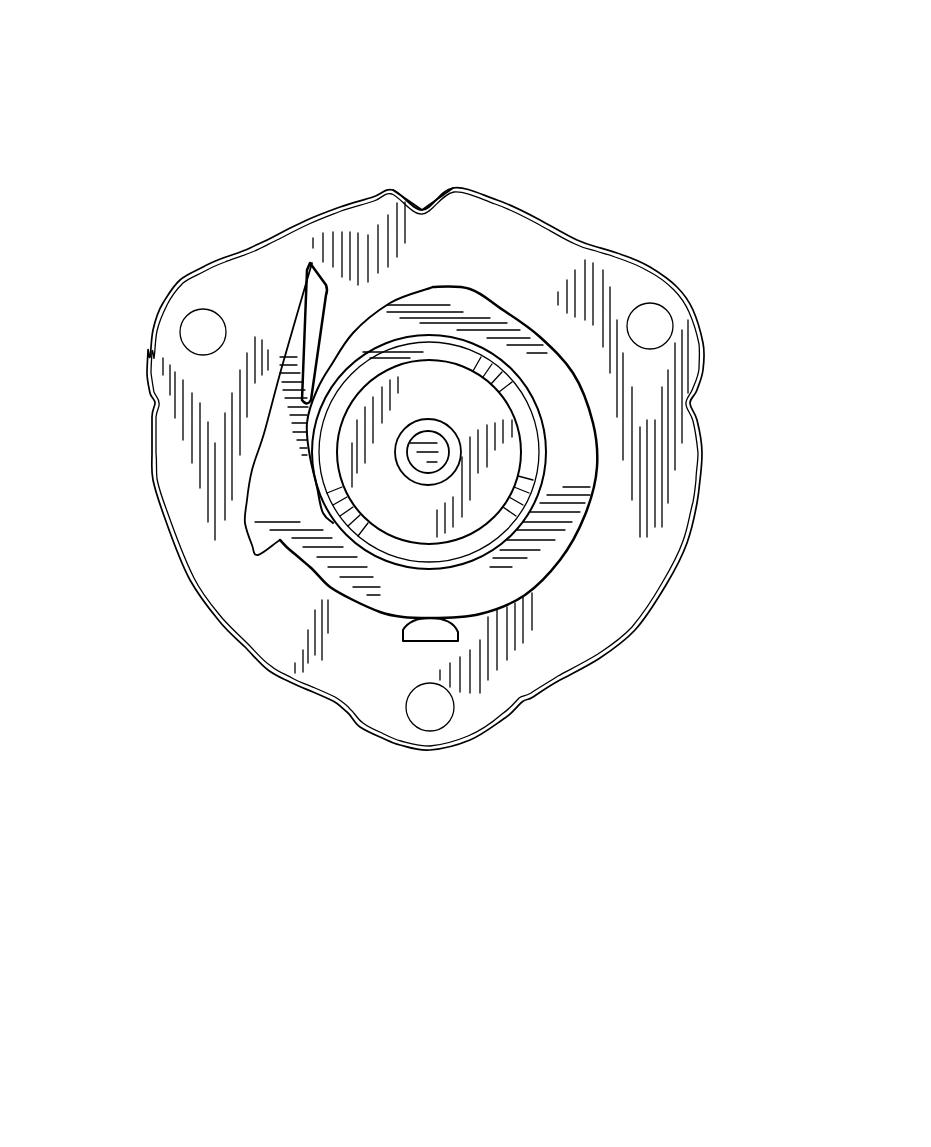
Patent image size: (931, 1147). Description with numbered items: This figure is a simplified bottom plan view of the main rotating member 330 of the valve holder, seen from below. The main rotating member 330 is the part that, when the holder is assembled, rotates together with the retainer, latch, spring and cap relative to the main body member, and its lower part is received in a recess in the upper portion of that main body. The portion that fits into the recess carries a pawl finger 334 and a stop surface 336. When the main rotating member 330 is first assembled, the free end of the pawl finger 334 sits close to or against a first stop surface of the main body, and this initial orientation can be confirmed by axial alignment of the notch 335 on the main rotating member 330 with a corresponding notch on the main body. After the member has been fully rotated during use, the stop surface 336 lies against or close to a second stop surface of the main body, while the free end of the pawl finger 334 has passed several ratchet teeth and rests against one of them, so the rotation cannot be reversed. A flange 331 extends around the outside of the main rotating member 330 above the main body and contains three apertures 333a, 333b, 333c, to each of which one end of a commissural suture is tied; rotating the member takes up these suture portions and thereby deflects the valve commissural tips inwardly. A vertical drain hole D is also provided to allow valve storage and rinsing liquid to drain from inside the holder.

The main rotating member 330 is at (614, 168).
The flange 331 is at (706, 481).
The aperture 333a is at (431, 712).
The aperture 333b is at (662, 324).
The aperture 333c is at (198, 331).
The pawl finger 334 is at (305, 304).
The notch 335 is at (414, 206).
The stop surface 336 is at (282, 548).
The drain hole D is at (443, 628).